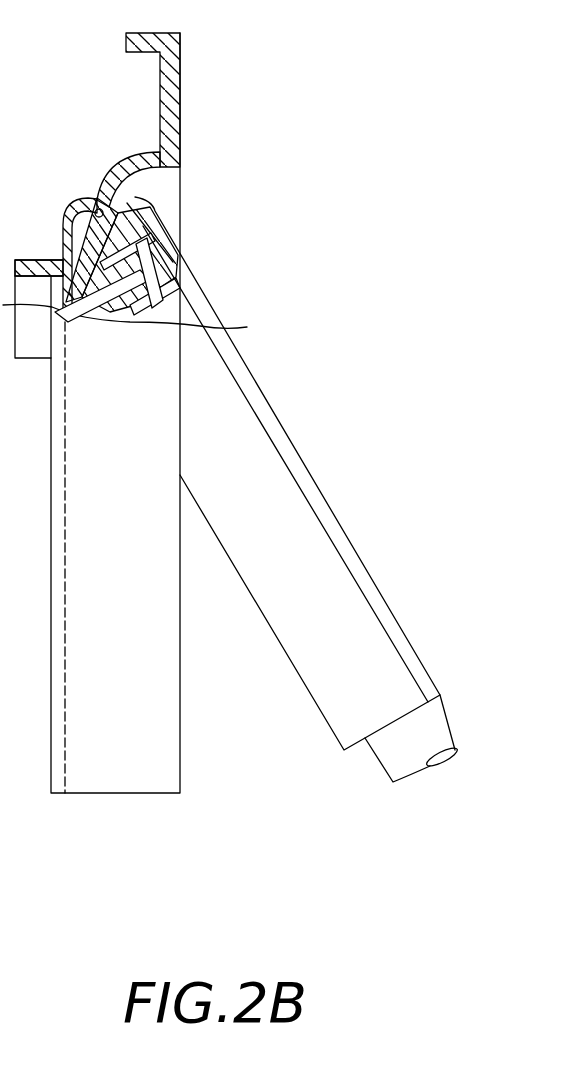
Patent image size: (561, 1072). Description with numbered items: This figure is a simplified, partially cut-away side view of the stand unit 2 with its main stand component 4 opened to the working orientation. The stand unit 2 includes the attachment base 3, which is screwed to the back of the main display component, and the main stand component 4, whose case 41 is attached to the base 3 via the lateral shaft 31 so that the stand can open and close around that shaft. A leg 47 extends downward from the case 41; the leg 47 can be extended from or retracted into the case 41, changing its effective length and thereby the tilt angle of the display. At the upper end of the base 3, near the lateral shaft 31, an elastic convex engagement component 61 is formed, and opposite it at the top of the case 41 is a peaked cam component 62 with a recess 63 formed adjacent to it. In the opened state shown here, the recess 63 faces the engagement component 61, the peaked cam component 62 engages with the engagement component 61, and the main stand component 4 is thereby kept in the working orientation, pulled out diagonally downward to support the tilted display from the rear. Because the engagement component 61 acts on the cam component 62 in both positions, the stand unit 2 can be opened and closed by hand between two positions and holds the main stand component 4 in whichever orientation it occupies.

The stand unit 2 is at (134, 413).
The attachment base 3 is at (180, 57).
The main stand component 4 is at (297, 531).
The lateral shaft 31 is at (168, 257).
The case 41 is at (322, 722).
The leg 47 is at (378, 757).
The engagement component 61 is at (88, 200).
The peaked cam component 62 is at (56, 222).
The recess 63 is at (152, 208).